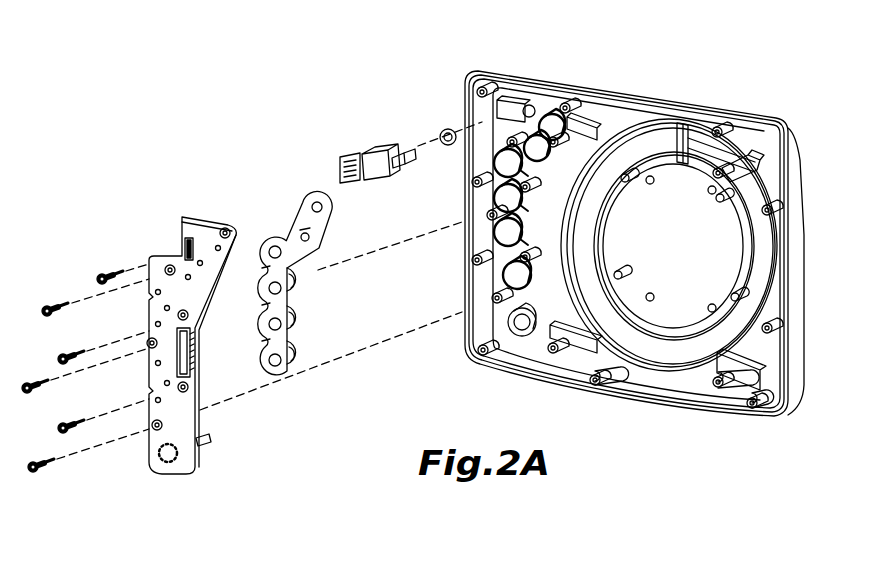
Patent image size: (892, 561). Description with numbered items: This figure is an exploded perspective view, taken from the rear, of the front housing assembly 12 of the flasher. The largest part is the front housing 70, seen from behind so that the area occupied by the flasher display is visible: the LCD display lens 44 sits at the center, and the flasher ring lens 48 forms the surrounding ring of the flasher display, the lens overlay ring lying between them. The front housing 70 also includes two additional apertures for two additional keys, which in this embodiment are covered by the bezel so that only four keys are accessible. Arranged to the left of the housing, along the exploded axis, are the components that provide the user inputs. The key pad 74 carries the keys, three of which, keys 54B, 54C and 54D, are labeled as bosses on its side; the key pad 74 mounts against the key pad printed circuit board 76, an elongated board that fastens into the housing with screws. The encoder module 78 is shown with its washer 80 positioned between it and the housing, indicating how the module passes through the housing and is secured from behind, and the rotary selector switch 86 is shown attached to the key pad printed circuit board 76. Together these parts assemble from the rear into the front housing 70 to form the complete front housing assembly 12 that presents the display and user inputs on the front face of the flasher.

The front housing assembly 12 is at (812, 393).
The LCD display lens 44 is at (689, 254).
The flasher ring lens 48 is at (672, 360).
The key 54B is at (308, 279).
The key 54C is at (300, 314).
The key 54D is at (300, 349).
The front housing 70 is at (803, 196).
The key pad 74 is at (298, 207).
The key pad printed circuit board 76 is at (174, 474).
The encoder module 78 is at (375, 170).
The washer 80 is at (451, 128).
The rotary selector switch 86 is at (202, 449).